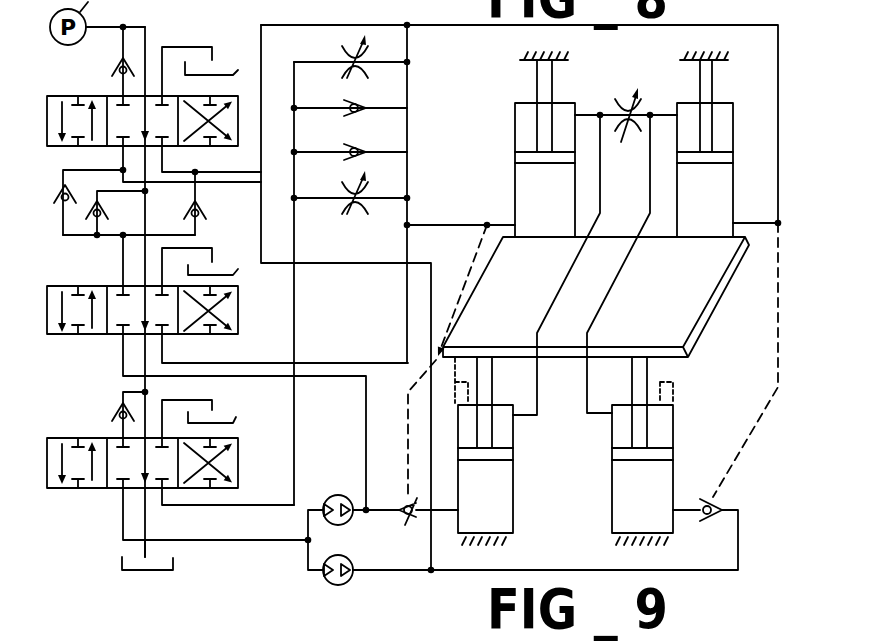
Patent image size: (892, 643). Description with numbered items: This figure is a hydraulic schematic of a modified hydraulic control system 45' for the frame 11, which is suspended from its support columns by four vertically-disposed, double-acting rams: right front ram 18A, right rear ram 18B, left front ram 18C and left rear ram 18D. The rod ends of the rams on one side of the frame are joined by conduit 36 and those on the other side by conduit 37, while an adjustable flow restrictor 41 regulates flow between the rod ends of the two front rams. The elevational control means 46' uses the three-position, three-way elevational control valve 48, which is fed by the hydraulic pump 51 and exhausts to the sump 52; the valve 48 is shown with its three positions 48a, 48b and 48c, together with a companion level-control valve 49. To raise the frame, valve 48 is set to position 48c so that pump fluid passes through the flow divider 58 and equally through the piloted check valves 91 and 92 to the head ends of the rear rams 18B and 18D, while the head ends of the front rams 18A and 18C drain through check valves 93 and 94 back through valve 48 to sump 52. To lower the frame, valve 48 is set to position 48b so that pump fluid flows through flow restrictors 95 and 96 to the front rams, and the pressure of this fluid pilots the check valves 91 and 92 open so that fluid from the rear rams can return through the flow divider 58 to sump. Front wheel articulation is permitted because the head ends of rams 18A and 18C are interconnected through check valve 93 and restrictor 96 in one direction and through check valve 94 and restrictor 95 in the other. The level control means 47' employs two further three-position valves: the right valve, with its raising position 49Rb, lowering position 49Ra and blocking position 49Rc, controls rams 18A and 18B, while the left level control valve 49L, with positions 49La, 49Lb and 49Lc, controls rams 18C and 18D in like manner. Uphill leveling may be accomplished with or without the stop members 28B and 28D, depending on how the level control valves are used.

The frame 11 is at (722, 307).
The right front hydraulic ram 18A is at (763, 121).
The right rear hydraulic ram 18B is at (688, 449).
The left front hydraulic ram 18C is at (498, 160).
The left rear hydraulic ram 18D is at (526, 481).
The stop member 28B is at (673, 385).
The stop member 28D is at (470, 328).
The conduit 36 is at (620, 277).
The conduit 37 is at (558, 290).
The adjustable flow restrictor 41 is at (626, 135).
The hydraulic control system 45' is at (96, 546).
The elevational control means 46' is at (91, 396).
The level control means 47' is at (154, 147).
The elevational control valve 48 is at (168, 453).
The first position of elevational control valve 48a is at (87, 438).
The second position of elevational control valve 48b is at (233, 436).
The raising position of elevational control valve 48c is at (189, 433).
The level control valve 49 is at (148, 101).
The second position of right level control valve 49Ra is at (100, 95).
The first position of right level control valve 49Rb is at (194, 146).
The third position of right level control valve 49Rc is at (104, 146).
The left level control valve 49L is at (166, 306).
The first position of left level control valve 49La is at (67, 286).
The second position of left level control valve 49Lb is at (200, 334).
The third position of left level control valve 49Lc is at (122, 335).
The hydraulic pump 51 is at (521, 113).
The sump 52 is at (231, 70).
The flow divider 58 is at (382, 546).
The piloted check valve 91 is at (730, 497).
The piloted check valve 92 is at (411, 530).
The check valve 93 is at (344, 122).
The check valve 94 is at (344, 166).
The flow restrictor 95 is at (350, 53).
The flow restrictor 96 is at (338, 192).